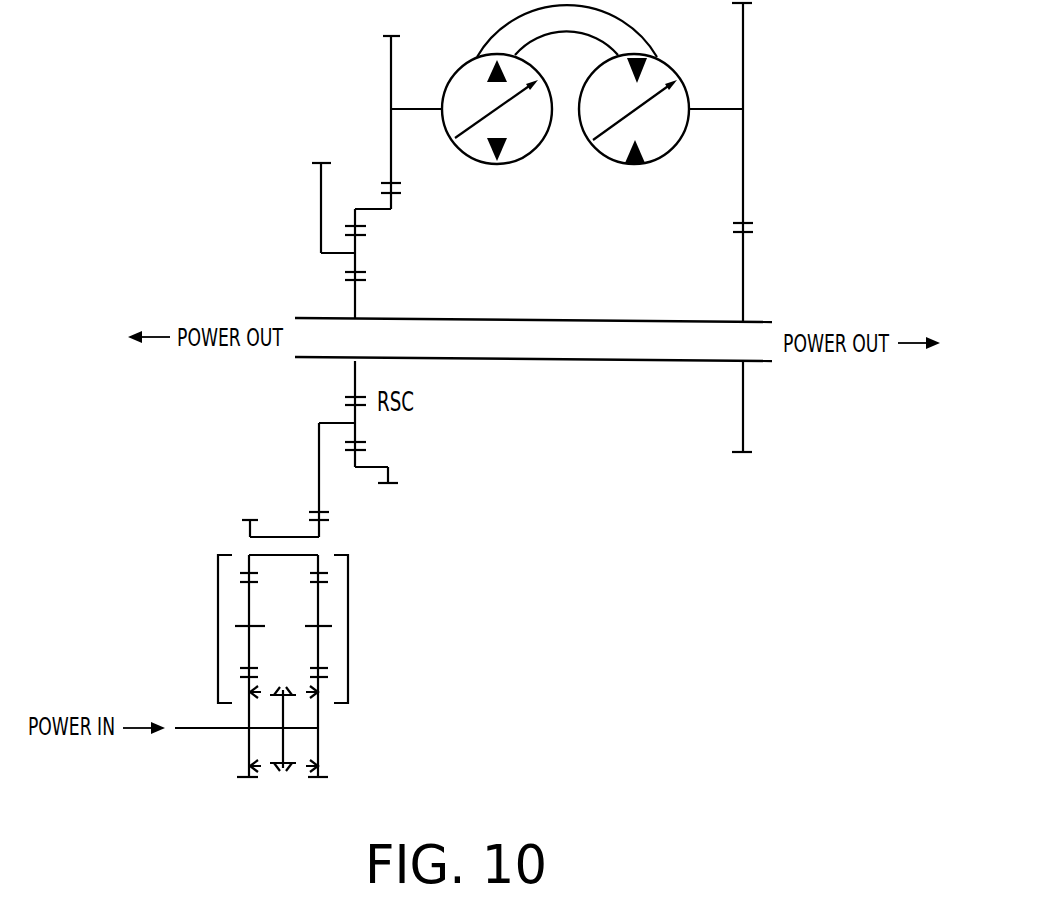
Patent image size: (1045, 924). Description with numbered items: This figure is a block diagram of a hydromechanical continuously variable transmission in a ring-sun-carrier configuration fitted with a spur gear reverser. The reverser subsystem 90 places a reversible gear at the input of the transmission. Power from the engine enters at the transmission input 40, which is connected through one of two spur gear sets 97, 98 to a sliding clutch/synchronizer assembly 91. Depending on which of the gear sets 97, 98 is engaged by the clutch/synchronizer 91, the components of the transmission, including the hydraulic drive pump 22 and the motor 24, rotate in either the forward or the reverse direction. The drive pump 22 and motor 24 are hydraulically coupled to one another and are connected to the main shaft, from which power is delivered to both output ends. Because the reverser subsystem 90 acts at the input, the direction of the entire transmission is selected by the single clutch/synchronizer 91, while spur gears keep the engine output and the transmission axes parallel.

The hydraulic drive pump 22 is at (477, 135).
The motor 24 is at (615, 137).
The transmission input 40 is at (318, 157).
The reverser subsystem 90 is at (213, 538).
The sliding clutch/synchronizer assembly 91 is at (282, 783).
The spur gear set 97 is at (218, 628).
The spur gear set 98 is at (348, 628).